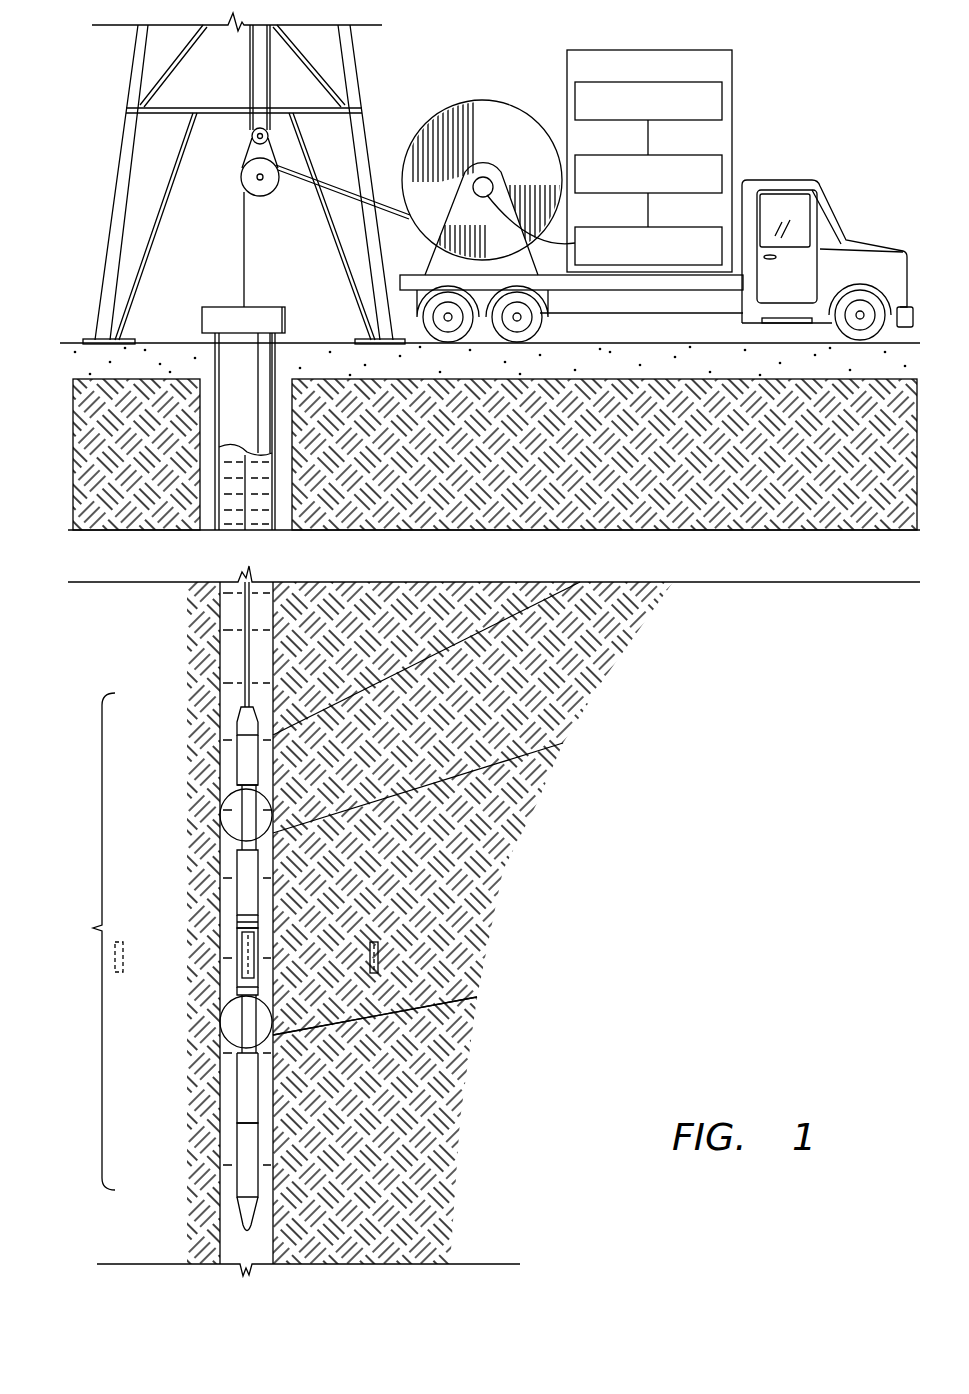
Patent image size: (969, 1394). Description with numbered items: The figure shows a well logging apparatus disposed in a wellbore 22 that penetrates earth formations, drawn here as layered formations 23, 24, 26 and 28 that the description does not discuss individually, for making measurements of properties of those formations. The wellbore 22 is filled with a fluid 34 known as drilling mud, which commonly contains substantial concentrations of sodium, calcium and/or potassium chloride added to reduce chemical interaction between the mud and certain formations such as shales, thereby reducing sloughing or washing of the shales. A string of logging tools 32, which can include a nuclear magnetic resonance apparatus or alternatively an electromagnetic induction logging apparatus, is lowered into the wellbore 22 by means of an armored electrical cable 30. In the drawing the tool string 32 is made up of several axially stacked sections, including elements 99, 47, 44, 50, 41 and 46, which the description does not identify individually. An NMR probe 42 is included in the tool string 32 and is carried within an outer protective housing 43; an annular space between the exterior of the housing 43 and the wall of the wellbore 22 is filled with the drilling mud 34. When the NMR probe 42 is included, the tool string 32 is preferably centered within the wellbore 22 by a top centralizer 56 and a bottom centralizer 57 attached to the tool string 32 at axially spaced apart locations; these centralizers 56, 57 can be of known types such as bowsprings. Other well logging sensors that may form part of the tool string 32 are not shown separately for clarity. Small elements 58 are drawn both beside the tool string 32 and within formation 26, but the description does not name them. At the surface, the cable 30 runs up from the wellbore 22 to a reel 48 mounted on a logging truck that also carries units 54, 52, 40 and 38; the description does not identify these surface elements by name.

The surface control panel 54 is at (663, 50).
The recorder 52 is at (665, 82).
The computer 40 is at (665, 155).
The telemetry unit 38 is at (665, 227).
The cable reel 48 is at (483, 102).
The drilling mud 34 is at (235, 622).
The armored electrical cable 30 is at (245, 668).
The cable head 99 is at (238, 720).
The upper tool section 47 is at (238, 758).
The top centralizer 56 is at (223, 820).
The tool section 44 is at (237, 883).
The tool section 50 is at (237, 918).
The outer protective housing 43 is at (237, 950).
The NMR probe 42 is at (242, 973).
The bottom centralizer 57 is at (223, 1028).
The tool section 41 is at (237, 1085).
The lower tool section 46 is at (237, 1148).
The wellbore 22 is at (230, 1187).
The string of logging tools 32 is at (87, 941).
The sensor elements 58 is at (119, 972).
The formation layer 23 is at (386, 640).
The formation layer 24 is at (386, 760).
The formation layer 26 is at (386, 889).
The formation layer 28 is at (386, 1132).